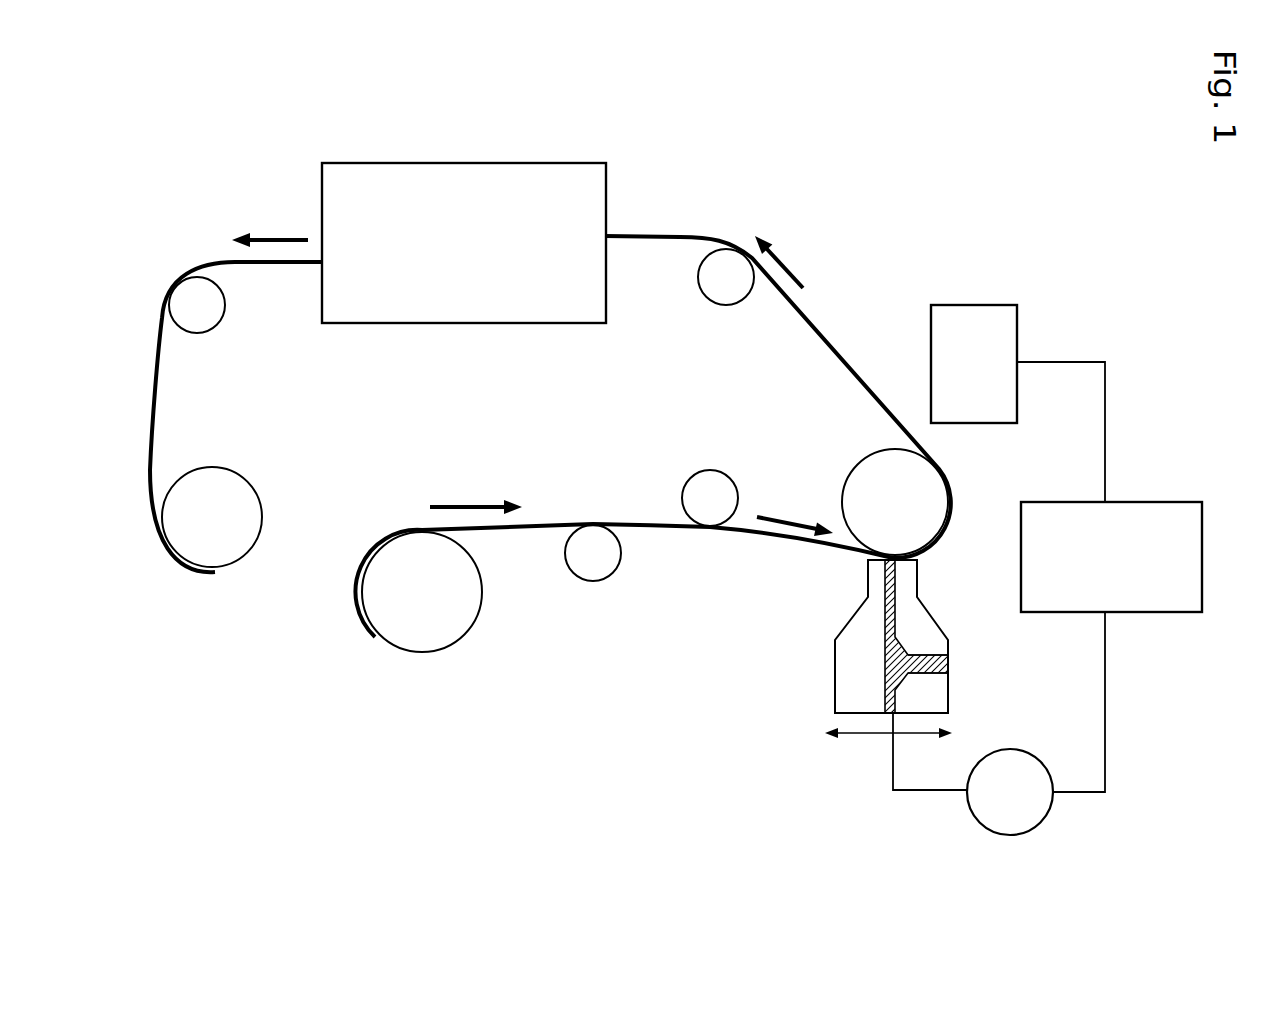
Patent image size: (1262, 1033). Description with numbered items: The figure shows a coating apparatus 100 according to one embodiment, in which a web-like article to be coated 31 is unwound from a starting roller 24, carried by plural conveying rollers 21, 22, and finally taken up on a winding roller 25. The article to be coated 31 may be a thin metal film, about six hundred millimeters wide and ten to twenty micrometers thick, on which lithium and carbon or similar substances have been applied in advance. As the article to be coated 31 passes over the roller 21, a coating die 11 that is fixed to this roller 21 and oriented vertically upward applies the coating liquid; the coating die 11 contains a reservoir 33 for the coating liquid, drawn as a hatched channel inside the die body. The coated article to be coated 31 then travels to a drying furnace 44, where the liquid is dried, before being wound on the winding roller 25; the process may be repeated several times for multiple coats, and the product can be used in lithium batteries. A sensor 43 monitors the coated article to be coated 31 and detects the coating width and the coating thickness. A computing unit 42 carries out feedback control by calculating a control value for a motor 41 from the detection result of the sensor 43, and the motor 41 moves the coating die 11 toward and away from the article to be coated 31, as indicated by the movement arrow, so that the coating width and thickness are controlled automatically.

The coating apparatus 100 is at (796, 230).
The coating die 11 is at (848, 657).
The roller 21 is at (860, 485).
The roller 22 is at (712, 490).
The starting roller 24 is at (430, 635).
The winding roller 25 is at (220, 557).
The article to be coated 31 is at (673, 535).
The reservoir 33 is at (948, 663).
The motor 41 is at (977, 822).
The computing unit 42 is at (1148, 612).
The sensor 43 is at (972, 303).
The drying furnace 44 is at (466, 325).